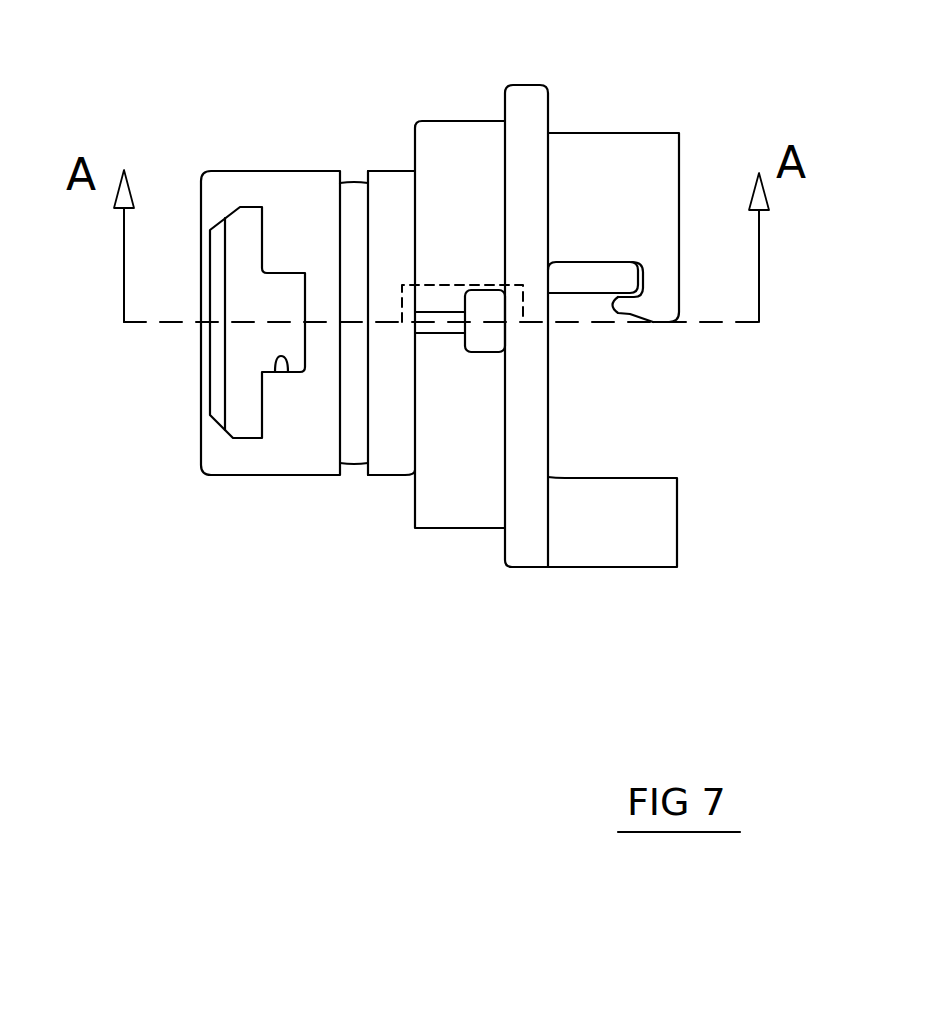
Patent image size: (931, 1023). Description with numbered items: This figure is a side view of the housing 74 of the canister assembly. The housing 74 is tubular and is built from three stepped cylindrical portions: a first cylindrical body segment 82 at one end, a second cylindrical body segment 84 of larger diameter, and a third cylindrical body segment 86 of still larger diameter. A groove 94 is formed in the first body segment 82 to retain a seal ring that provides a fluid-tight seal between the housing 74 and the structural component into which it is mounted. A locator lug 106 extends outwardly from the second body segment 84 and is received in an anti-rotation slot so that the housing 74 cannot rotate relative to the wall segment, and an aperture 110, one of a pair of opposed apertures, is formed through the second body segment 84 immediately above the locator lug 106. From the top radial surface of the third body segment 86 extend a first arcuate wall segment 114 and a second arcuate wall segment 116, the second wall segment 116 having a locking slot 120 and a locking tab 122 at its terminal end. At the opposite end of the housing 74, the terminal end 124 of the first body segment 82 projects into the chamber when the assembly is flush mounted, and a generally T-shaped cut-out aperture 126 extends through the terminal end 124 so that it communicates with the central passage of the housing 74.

The housing 74 is at (222, 497).
The first cylindrical body segment 82 is at (294, 185).
The second cylindrical body segment 84 is at (450, 140).
The third cylindrical body segment 86 is at (522, 95).
The groove 94 is at (350, 466).
The locator lug 106 is at (436, 320).
The aperture 110 is at (490, 343).
The first arcuate wall segment 114 is at (628, 553).
The second arcuate wall segment 116 is at (605, 150).
The locking slot 120 is at (582, 268).
The locking tab 122 is at (630, 298).
The terminal end 124 is at (212, 198).
The cut-out aperture 126 is at (288, 362).